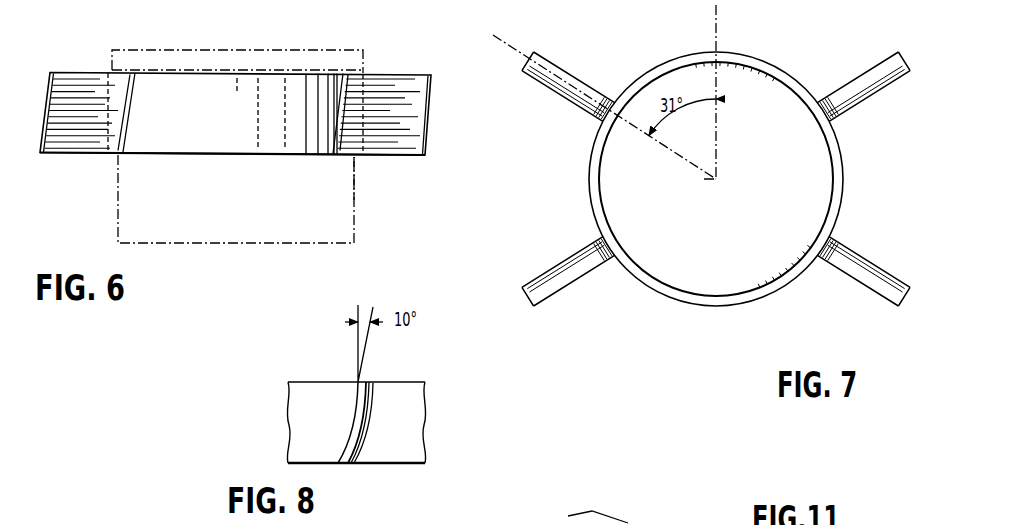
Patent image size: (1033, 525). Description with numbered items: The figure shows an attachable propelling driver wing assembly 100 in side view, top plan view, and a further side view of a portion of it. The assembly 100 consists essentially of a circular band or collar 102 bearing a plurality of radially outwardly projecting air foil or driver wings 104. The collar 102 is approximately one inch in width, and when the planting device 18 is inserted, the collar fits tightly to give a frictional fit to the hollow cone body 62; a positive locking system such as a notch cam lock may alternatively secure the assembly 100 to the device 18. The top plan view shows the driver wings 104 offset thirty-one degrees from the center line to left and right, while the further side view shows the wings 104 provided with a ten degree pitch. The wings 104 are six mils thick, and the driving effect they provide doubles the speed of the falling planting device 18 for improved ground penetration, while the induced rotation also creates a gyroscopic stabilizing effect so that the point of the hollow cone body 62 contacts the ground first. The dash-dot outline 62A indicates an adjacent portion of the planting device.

In FIG. 6, the planting device 18 is at (358, 197).
In FIG. 6, the hollow cone body 62 is at (357, 231).
In FIG. 6, the connector housing portion 62A is at (242, 48).
In FIG. 6, the driver wing assembly 100 is at (300, 158).
In FIG. 7, the driver wing assembly 100 is at (774, 301).
In FIG. 8, the driver wing assembly 100 is at (307, 421).
In FIG. 6, the circular band or collar 102 is at (178, 140).
In FIG. 7, the circular band or collar 102 is at (597, 204).
In FIG. 8, the circular band or collar 102 is at (390, 452).
In FIG. 6, the driver wings 104 is at (79, 87).
In FIG. 7, the driver wings 104 is at (580, 84).
In FIG. 8, the driver wings 104 is at (366, 436).